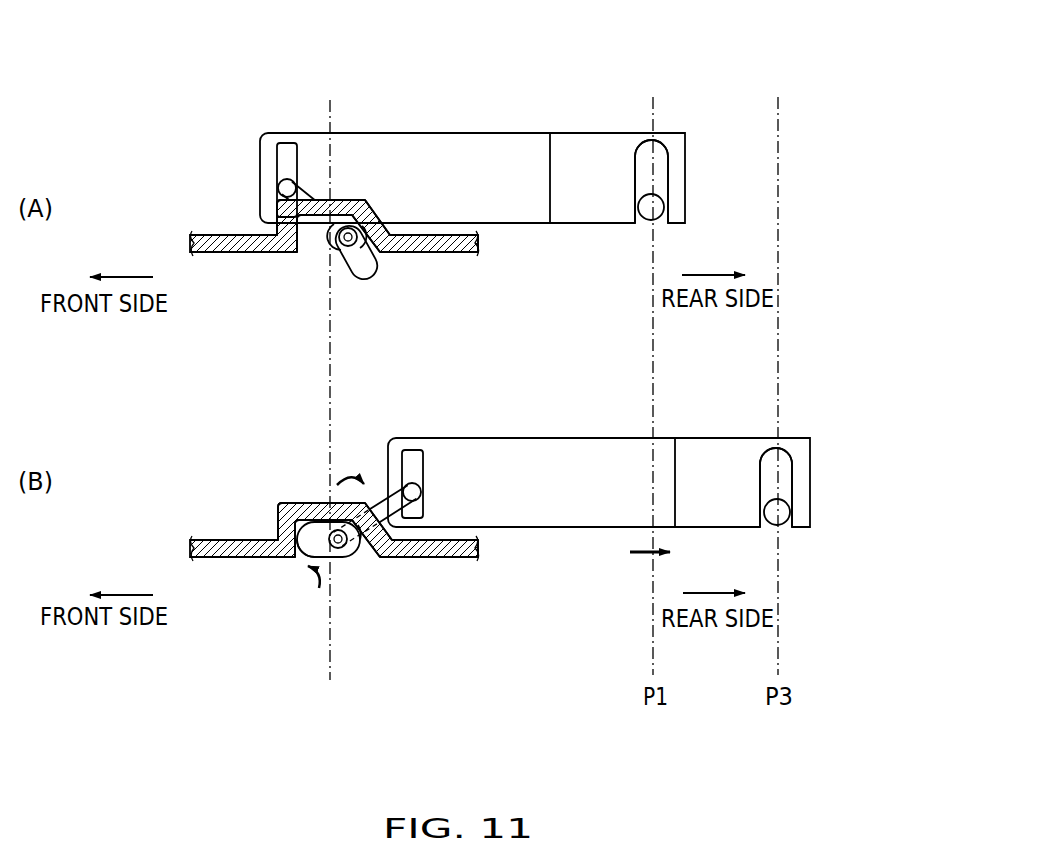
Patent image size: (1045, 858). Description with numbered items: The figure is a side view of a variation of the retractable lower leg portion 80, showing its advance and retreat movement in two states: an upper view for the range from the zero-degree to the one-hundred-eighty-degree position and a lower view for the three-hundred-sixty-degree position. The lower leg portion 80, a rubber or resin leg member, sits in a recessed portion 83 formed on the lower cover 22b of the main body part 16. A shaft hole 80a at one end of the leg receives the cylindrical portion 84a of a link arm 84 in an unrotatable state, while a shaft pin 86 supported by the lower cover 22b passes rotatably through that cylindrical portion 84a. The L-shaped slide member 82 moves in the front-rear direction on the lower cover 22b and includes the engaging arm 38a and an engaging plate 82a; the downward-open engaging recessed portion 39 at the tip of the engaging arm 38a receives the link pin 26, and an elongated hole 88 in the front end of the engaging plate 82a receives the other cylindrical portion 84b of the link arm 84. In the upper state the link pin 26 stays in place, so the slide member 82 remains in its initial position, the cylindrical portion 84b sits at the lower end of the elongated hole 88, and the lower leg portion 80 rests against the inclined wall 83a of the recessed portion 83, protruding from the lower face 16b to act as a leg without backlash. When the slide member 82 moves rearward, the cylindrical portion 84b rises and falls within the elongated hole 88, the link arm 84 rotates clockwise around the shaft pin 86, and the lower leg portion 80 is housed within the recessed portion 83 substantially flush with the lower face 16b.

The main body part 16 is at (494, 100).
The lower face of the main body part 16b is at (478, 252).
The lower cover 22b is at (452, 254).
The link pin 26 is at (658, 215).
The engaging arm 38a is at (618, 226).
The engaging recessed portion 39 is at (640, 165).
The lower leg portion 80 is at (362, 264).
The shaft hole 80a is at (333, 253).
The slide member 82 is at (524, 150).
The engaging plate 82a is at (426, 145).
The recessed portion 83 is at (297, 256).
The inclined wall 83a is at (367, 253).
The link arm 84 is at (312, 198).
The cylindrical portion 84a is at (370, 268).
The cylindrical portion 84b is at (280, 185).
The shaft pin 86 is at (358, 198).
The elongated hole 88 is at (285, 150).